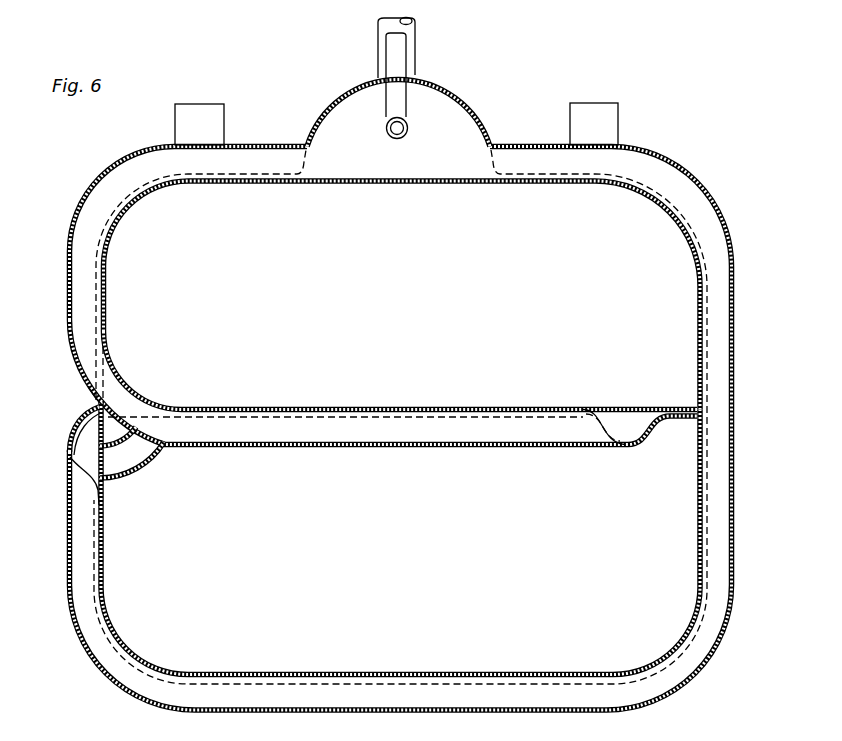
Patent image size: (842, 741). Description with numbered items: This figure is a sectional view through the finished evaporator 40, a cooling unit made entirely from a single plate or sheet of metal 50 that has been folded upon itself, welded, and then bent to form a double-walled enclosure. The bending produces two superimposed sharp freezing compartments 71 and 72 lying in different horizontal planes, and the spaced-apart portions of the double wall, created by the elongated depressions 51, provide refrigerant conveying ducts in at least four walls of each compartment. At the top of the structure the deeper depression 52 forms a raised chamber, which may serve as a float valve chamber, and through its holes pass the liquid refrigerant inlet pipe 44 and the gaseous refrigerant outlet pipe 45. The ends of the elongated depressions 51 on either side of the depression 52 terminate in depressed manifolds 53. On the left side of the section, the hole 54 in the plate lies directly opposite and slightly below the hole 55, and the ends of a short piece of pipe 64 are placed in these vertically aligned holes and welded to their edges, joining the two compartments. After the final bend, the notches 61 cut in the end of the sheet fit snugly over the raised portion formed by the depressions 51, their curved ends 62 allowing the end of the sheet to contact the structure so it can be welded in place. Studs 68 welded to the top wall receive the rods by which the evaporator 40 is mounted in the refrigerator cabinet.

The evaporator 40 is at (397, 364).
The liquid refrigerant inlet pipe 44 is at (398, 62).
The gaseous refrigerant outlet pipe 45 is at (413, 38).
The plate or single sheet of metal 50 is at (437, 406).
The elongated depressions 51 is at (67, 338).
The depression 52 is at (342, 115).
The depressed manifolds 53 is at (80, 455).
The hole or opening 54 is at (105, 478).
The hole or opening 55 is at (165, 443).
The notches 61 is at (95, 367).
The curved end 62 is at (97, 402).
The short piece of pipe 64 is at (143, 463).
The studs 68 is at (183, 118).
The sharp freezing compartment 71 is at (640, 218).
The sharp freezing compartment 72 is at (653, 547).